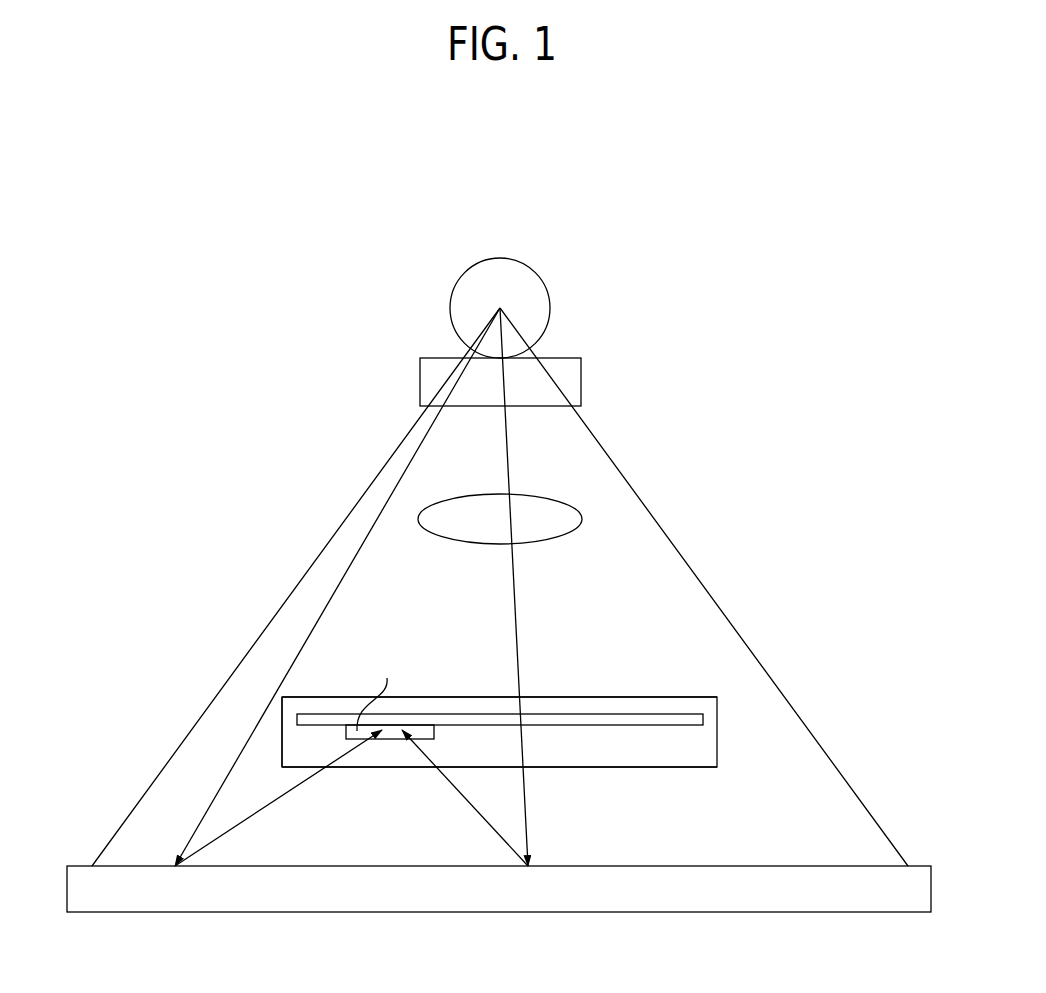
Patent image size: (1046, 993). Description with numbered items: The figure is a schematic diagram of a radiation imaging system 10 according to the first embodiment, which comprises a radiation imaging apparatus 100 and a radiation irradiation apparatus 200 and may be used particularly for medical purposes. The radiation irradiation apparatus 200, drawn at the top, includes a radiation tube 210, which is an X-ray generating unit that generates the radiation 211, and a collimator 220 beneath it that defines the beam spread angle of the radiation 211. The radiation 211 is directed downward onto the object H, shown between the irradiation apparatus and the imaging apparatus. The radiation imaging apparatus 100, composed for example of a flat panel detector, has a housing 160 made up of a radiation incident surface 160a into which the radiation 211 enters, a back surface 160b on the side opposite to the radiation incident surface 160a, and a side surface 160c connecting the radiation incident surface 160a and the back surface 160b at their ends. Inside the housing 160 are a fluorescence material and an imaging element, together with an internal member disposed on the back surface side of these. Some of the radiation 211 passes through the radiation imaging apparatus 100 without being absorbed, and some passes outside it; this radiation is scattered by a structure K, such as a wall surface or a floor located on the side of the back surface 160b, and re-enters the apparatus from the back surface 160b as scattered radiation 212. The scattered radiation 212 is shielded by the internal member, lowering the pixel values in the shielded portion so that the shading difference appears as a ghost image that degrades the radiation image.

The radiation imaging system 10 is at (505, 171).
The radiation irradiation apparatus 200 is at (498, 329).
The radiation tube 210 is at (462, 300).
The collimator 220 is at (427, 377).
The radiation 211 is at (390, 457).
The scattered radiation 212 is at (290, 792).
The object H is at (480, 532).
The radiation imaging apparatus 100 is at (455, 731).
The housing 160 is at (613, 698).
The radiation incident surface 160a is at (550, 696).
The back surface 160b is at (553, 769).
The side surface 160c is at (282, 731).
The structure K is at (538, 893).